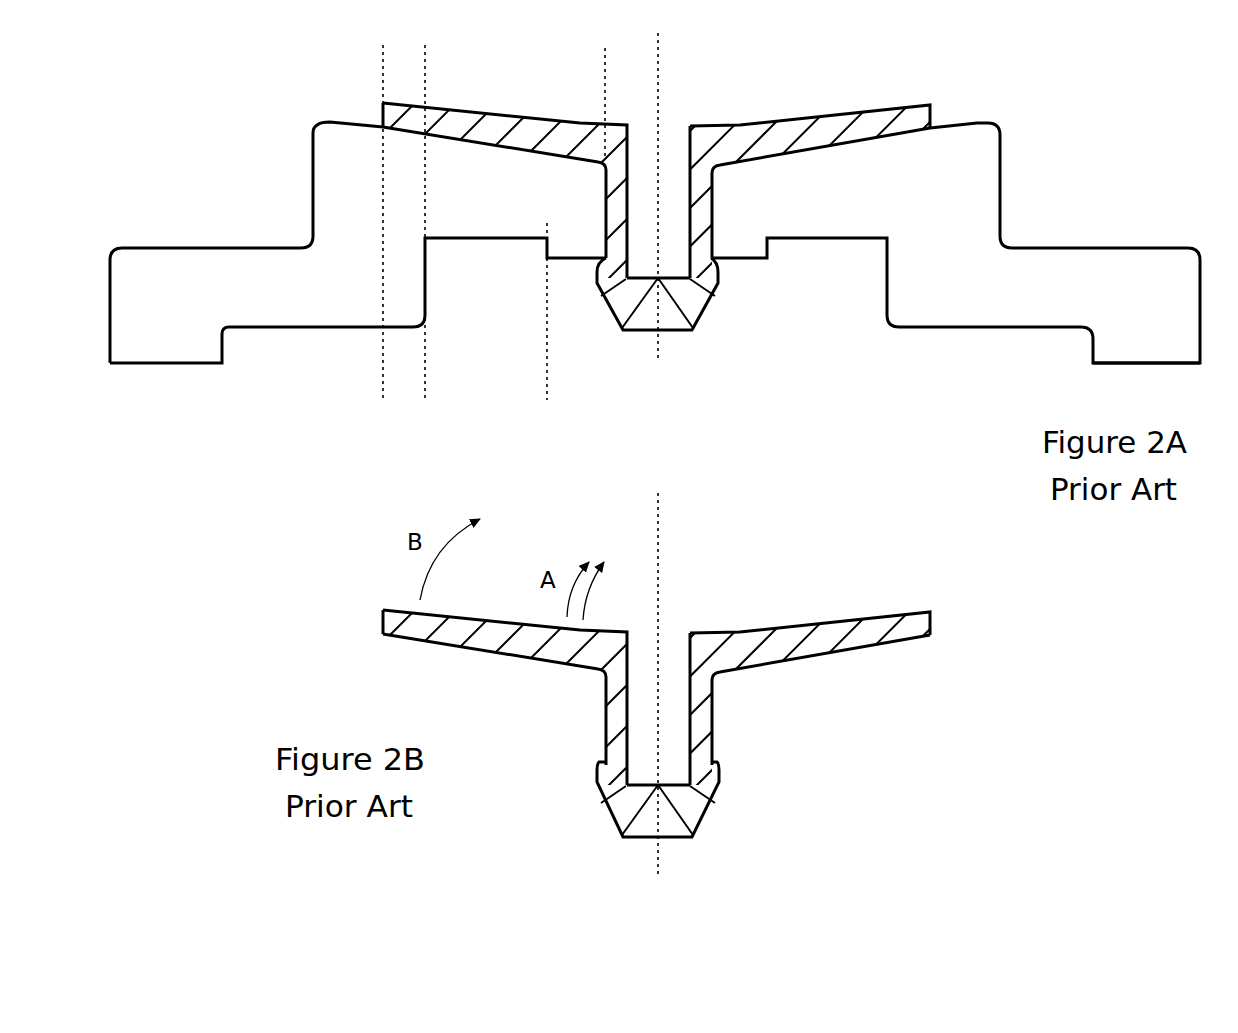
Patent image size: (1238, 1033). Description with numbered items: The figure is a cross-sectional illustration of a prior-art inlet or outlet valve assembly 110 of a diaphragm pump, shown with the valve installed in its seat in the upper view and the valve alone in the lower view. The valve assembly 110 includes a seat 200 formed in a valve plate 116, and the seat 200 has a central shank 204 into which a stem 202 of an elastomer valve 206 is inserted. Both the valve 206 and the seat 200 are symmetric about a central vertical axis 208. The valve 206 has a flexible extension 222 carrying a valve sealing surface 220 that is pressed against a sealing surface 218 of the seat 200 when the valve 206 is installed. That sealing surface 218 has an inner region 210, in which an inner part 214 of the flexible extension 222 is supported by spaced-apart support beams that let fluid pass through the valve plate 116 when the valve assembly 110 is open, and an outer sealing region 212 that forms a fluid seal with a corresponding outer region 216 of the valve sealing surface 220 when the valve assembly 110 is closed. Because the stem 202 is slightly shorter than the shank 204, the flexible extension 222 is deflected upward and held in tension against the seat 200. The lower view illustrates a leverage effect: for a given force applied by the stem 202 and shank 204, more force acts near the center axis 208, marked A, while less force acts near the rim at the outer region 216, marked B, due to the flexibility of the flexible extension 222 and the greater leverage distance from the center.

In FIG. 2A, the valve assembly 110 is at (655, 208).
In FIG. 2A, the valve plate 116 is at (1156, 304).
In FIG. 2A, the seat 200 is at (956, 194).
In FIG. 2B, the stem 202 is at (574, 702).
In FIG. 2A, the shank 204 is at (713, 207).
In FIG. 2A, the valve 206 is at (708, 312).
In FIG. 2B, the valve 206 is at (681, 652).
In FIG. 2A, the central vertical axis 208 is at (657, 40).
In FIG. 2B, the central vertical axis 208 is at (662, 508).
In FIG. 2A, the inner region 210 is at (506, 377).
In FIG. 2A, the outer sealing region 212 is at (400, 372).
In FIG. 2A, the inner part of flexible extension 214 is at (532, 87).
In FIG. 2A, the outer region of valve sealing surface 216 is at (400, 82).
In FIG. 2A, the sealing surface 218 is at (858, 143).
In FIG. 2B, the valve sealing surface 220 is at (818, 702).
In FIG. 2A, the flexible extension 222 is at (818, 170).
In FIG. 2B, the flexible extension 222 is at (818, 679).